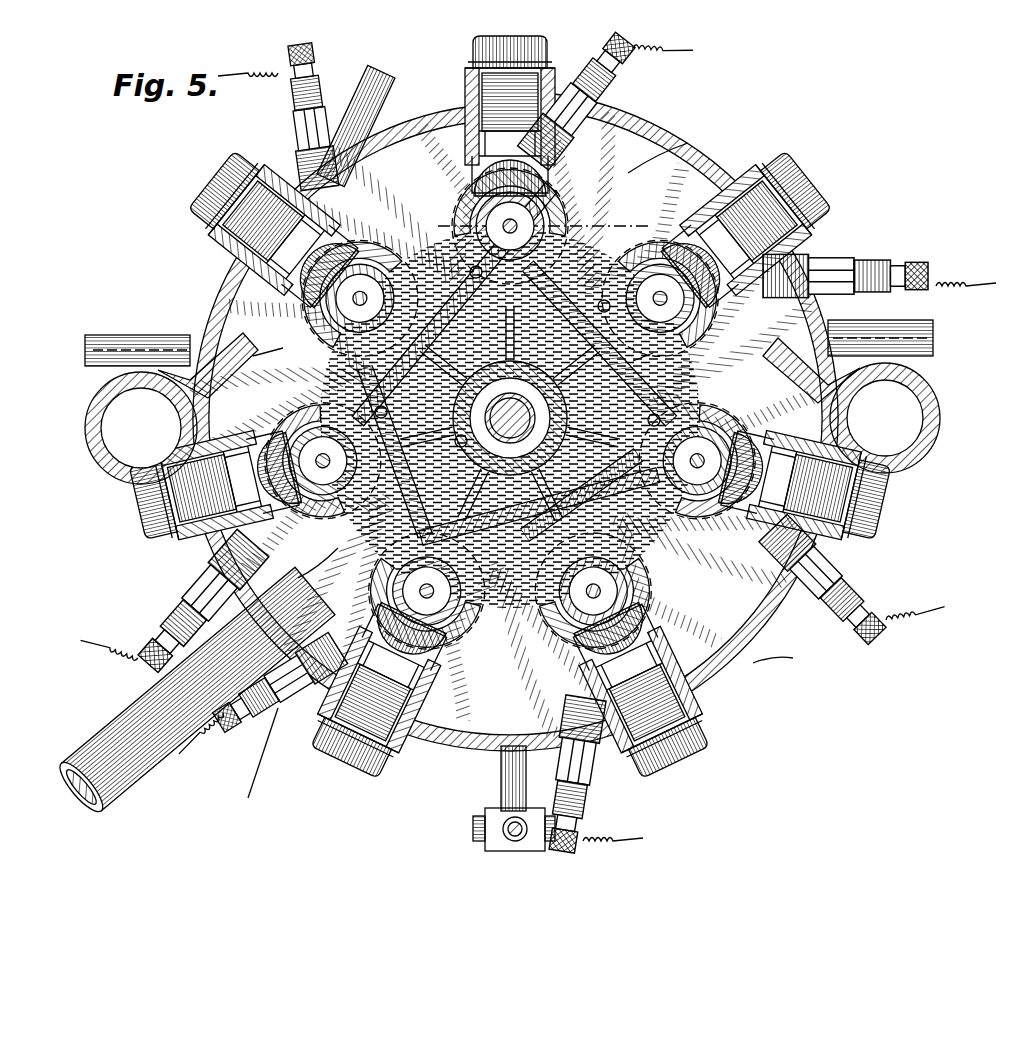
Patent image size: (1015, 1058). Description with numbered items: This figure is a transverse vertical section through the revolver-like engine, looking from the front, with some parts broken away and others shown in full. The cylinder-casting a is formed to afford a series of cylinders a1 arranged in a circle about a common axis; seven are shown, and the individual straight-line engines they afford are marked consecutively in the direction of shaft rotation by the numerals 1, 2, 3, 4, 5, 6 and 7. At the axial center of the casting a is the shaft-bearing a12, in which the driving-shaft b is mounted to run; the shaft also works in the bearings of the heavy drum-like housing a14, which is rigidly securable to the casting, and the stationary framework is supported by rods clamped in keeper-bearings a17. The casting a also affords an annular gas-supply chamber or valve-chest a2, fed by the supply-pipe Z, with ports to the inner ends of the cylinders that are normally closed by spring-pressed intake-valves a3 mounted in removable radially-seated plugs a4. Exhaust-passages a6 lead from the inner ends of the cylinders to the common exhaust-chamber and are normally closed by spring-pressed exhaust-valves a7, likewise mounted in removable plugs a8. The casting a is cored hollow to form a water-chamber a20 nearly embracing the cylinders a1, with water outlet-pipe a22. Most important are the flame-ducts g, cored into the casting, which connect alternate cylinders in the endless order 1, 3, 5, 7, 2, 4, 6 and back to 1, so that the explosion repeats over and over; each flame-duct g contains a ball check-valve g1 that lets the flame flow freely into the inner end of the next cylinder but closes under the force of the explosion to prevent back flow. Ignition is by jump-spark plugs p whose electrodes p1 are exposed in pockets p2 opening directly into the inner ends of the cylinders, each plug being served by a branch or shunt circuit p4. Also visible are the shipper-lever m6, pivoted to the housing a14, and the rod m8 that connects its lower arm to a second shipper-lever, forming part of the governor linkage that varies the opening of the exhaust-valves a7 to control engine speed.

The cylinder-casting a is at (450, 351).
The cylinders a1 is at (509, 423).
The annular gas-supply chamber or valve-chest a2 is at (260, 768).
The intake-valves a3 is at (509, 369).
The radially-seated plugs a4 is at (210, 172).
The exhaust-passages a6 is at (215, 300).
The exhaust-valves a7 is at (500, 414).
The removable plugs a8 is at (509, 418).
The shaft-bearing a12 is at (458, 413).
The drum-like housing a14 is at (543, 336).
The keeper-bearings a17 is at (80, 410).
The water-chamber a20 is at (785, 660).
The water outlet-pipe a22 is at (355, 75).
The driving-shaft b is at (510, 418).
The flame-ducts g is at (514, 390).
The check-valve g1 is at (526, 366).
The shipper-lever m6 is at (495, 768).
The rod m8 is at (500, 815).
The jump-spark plugs p is at (268, 95).
The electrodes p1 is at (663, 422).
The pockets p2 is at (528, 373).
The branch or shunt circuits p4 is at (522, 439).
The supply-pipe Z is at (100, 712).
The first straight-line engine 1 is at (570, 62).
The second straight-line engine 2 is at (843, 240).
The third straight-line engine 3 is at (847, 555).
The fourth straight-line engine 4 is at (618, 760).
The fifth straight-line engine 5 is at (305, 730).
The sixth straight-line engine 6 is at (188, 565).
The seventh straight-line engine 7 is at (259, 140).